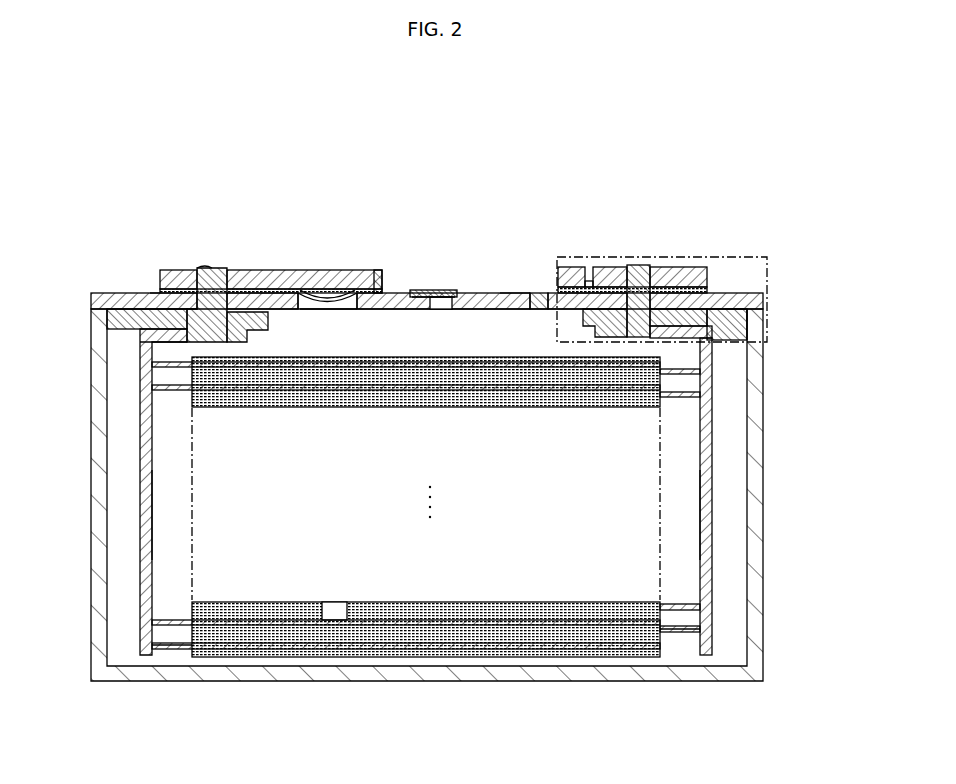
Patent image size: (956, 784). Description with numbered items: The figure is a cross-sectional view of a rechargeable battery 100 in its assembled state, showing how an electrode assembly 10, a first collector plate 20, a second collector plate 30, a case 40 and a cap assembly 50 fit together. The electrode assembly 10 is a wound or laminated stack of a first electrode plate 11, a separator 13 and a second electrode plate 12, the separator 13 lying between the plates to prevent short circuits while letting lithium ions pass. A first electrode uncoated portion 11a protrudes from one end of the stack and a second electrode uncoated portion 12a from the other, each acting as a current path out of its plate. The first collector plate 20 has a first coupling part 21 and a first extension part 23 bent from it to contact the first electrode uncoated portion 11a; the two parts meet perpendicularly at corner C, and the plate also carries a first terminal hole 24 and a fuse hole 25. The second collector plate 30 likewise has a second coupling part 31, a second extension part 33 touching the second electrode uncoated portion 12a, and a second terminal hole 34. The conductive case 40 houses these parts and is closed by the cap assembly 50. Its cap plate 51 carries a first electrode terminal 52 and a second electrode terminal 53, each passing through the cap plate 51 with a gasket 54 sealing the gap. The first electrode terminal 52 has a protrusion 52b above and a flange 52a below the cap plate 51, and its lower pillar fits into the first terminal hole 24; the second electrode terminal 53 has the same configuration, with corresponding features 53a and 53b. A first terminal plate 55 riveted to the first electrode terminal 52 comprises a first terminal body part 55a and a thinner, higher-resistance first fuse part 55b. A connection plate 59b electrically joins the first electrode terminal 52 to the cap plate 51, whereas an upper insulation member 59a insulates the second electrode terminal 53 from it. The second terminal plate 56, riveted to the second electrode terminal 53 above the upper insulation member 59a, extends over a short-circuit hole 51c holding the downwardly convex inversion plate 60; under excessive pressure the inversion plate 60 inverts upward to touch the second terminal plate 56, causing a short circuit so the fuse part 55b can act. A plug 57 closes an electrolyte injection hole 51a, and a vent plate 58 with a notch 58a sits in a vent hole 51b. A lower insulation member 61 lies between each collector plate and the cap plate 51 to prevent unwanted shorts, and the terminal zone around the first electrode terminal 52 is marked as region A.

The rechargeable battery 100 is at (750, 167).
The electrode assembly 10 is at (513, 665).
The first electrode plate 11 is at (585, 658).
The first electrode uncoated portion 11a is at (681, 633).
The second electrode plate 12 is at (299, 657).
The second electrode uncoated portion 12a is at (172, 650).
The separator 13 is at (440, 653).
The first collector plate 20 is at (712, 441).
The first coupling part 21 is at (712, 290).
The first extension part 23 is at (713, 511).
The first terminal hole 24 is at (652, 338).
The fuse hole 25 is at (733, 309).
The second collector plate 30 is at (140, 442).
The second coupling part 31 is at (153, 293).
The second extension part 33 is at (140, 514).
The second terminal hole 34 is at (145, 352).
The case 40 is at (755, 393).
The cap assembly 50 is at (487, 212).
The cap plate 51 is at (496, 292).
The electrolyte injection hole 51a is at (528, 309).
The vent hole 51b is at (441, 310).
The short-circuit hole 51c is at (340, 310).
The first electrode terminal 52 is at (644, 265).
The flange 52a is at (584, 326).
The protrusion 52b is at (656, 268).
The second electrode terminal 53 is at (214, 268).
The terminal flange 53a is at (268, 327).
The terminal head 53b is at (198, 267).
The gasket 54 is at (165, 270).
The first terminal plate 55 is at (588, 231).
The first terminal body part 55a is at (610, 245).
The first fuse part 55b is at (590, 266).
The second terminal plate 56 is at (284, 270).
The plug 57 is at (538, 292).
The vent plate 58 is at (414, 289).
The notch 58a is at (440, 296).
The upper insulation member 59a is at (378, 270).
The connection plate 59b is at (690, 274).
The inversion plate 60 is at (320, 290).
The lower insulation member 61 is at (112, 324).
The region A is at (752, 257).
The corner C is at (747, 308).